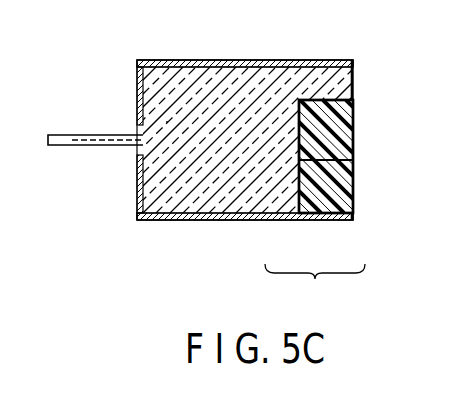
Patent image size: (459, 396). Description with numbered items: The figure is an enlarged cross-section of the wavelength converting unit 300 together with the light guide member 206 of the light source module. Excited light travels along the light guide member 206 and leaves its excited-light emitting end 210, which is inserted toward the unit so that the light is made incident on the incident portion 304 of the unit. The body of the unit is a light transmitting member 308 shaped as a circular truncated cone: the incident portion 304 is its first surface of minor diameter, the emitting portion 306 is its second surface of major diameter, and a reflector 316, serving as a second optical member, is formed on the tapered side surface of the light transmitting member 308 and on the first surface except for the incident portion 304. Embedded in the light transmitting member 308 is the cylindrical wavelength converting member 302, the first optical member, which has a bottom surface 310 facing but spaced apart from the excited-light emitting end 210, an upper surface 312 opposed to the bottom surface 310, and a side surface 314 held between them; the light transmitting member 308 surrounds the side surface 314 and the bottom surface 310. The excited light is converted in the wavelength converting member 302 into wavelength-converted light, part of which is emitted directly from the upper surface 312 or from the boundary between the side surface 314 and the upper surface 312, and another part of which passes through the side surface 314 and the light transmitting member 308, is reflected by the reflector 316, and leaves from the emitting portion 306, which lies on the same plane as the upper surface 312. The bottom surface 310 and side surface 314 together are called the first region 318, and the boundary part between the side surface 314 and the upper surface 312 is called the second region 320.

The wavelength converting unit 300 is at (124, 234).
The light guide member 206 is at (68, 147).
The excited-light emitting end 210 is at (167, 122).
The incident portion 304 is at (140, 138).
The emitting portion 306 is at (353, 82).
The light transmitting member 308 is at (208, 67).
The reflector 316 is at (275, 62).
The wavelength converting member 302 is at (353, 155).
The second region 320 is at (353, 98).
The upper surface 312 is at (353, 130).
The bottom surface 310 is at (300, 150).
The side surface 314 is at (330, 165).
The first region 318 is at (315, 286).